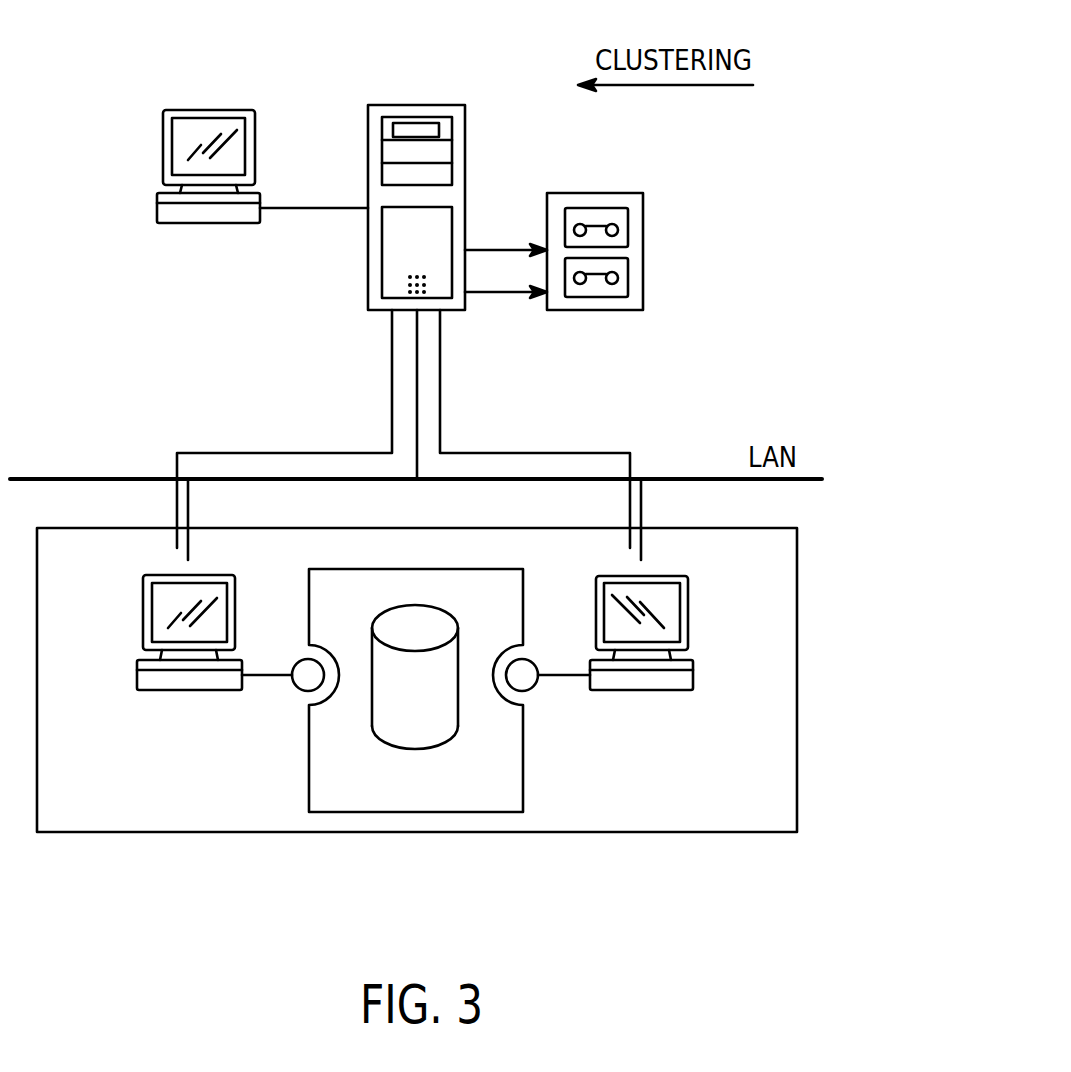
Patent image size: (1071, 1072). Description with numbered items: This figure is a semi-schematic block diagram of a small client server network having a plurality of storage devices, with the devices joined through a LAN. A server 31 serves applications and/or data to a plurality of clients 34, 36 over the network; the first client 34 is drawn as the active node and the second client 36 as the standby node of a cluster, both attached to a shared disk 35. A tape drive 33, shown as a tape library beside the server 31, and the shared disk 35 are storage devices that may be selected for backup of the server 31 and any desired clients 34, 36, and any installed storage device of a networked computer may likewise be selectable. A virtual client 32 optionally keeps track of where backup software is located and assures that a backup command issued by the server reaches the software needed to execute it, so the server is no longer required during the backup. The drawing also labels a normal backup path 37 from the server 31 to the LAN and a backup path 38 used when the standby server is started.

The server 31 is at (465, 143).
The virtual client 32 is at (163, 145).
The tape drive 33 is at (643, 248).
The client 34 is at (143, 612).
The shared disk 35 is at (402, 813).
The client 36 is at (688, 612).
The normal backup path 37 is at (176, 465).
The backup path when standby server is started 38 is at (632, 463).